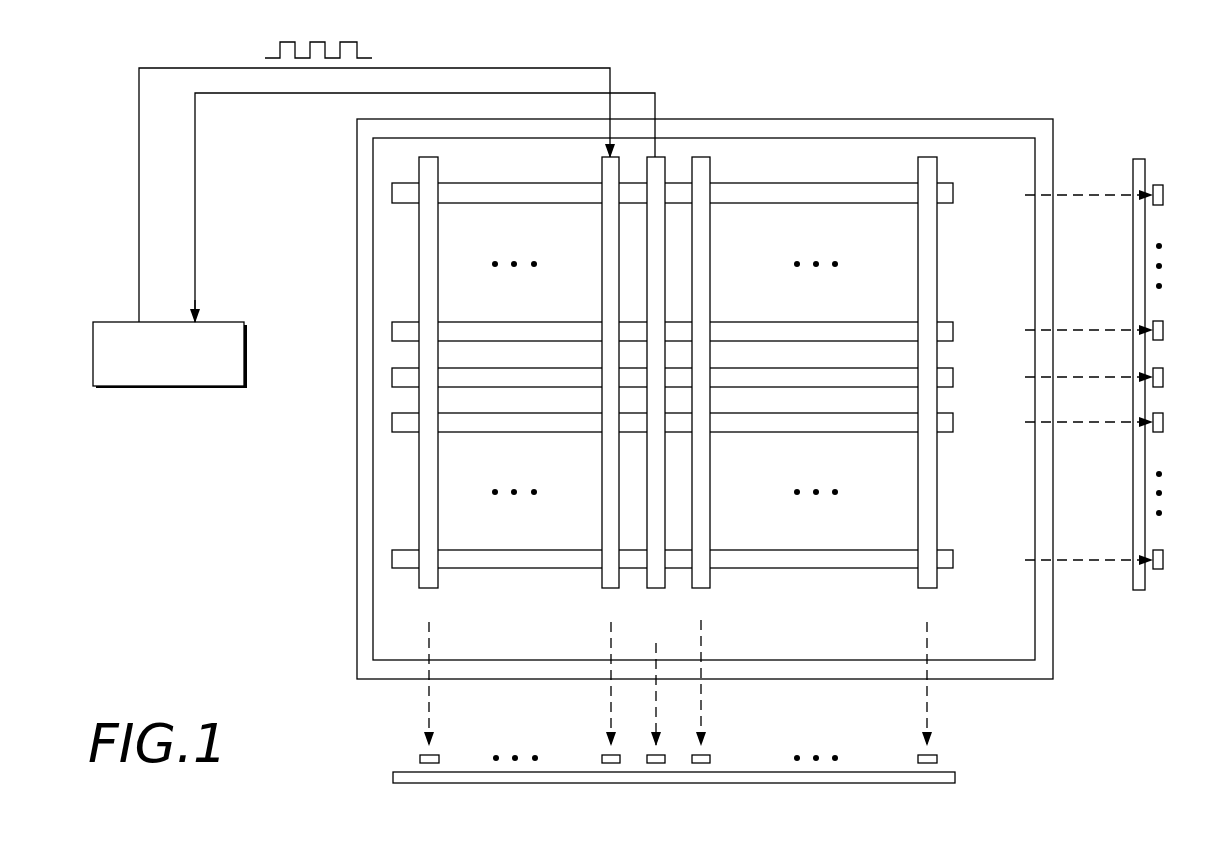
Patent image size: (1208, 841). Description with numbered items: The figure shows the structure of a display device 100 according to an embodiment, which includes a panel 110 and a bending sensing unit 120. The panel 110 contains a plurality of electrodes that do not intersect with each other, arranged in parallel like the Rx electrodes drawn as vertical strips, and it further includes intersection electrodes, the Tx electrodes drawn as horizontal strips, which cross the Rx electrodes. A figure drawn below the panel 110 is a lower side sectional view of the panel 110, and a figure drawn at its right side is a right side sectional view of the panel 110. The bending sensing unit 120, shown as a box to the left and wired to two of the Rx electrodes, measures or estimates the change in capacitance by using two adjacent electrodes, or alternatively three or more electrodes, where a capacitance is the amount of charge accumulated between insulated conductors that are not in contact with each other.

The display device 100 is at (105, 72).
The panel 110 is at (928, 119).
The bending sensing unit 120 is at (167, 390).